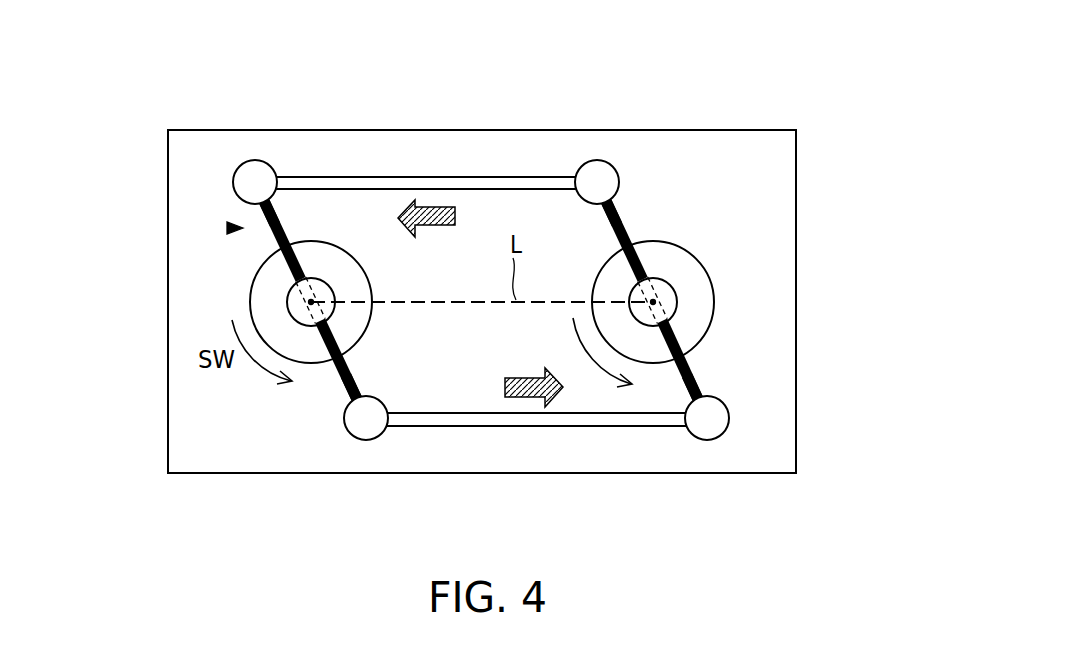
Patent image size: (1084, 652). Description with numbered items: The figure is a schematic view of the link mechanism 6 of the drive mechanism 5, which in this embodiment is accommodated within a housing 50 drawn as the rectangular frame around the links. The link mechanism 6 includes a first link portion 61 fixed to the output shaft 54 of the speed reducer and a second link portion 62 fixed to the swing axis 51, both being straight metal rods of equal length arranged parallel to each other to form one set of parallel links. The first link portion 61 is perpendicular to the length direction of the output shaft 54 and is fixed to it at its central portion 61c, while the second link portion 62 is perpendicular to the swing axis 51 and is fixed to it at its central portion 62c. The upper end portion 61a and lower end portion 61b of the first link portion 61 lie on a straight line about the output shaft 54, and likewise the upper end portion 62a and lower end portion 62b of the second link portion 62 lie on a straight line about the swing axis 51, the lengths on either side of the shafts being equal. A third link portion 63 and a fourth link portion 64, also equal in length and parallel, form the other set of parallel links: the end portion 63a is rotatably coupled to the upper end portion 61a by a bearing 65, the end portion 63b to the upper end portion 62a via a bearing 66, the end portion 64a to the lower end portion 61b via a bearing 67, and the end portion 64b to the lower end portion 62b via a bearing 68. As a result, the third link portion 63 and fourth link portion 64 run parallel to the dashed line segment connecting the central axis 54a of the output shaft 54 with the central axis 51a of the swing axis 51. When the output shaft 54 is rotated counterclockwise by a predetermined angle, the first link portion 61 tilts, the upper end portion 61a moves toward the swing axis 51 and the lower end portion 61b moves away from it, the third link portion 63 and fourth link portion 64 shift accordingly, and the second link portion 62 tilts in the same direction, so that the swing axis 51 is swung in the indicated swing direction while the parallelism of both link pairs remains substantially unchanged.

The drive mechanism 5 is at (784, 68).
The link mechanism 6 is at (228, 228).
The housing 50 is at (796, 188).
The swing axis 51 is at (263, 283).
The central axis of the swing axis 51a is at (189, 308).
The output shaft 54 is at (698, 294).
The central axis of the output shaft 54a is at (654, 302).
The first link portion 61 is at (693, 375).
The upper end portion of the first link portion 61a is at (622, 215).
The lower end portion of the first link portion 61b is at (703, 396).
The central portion of the first link portion 61c is at (779, 281).
The second link portion 62 is at (289, 259).
The upper end portion of the second link portion 62a is at (247, 206).
The lower end portion of the second link portion 62b is at (350, 398).
The central portion of the second link portion 62c is at (311, 302).
The third link portion 63 is at (473, 177).
The end portion of the third link portion 63a is at (561, 177).
The end portion of the third link portion 63b is at (285, 177).
The fourth link portion 64 is at (518, 427).
The end portion of the fourth link portion 64a is at (660, 427).
The end portion of the fourth link portion 64b is at (396, 427).
The bearing 65 is at (607, 163).
The bearing 66 is at (240, 163).
The bearing 67 is at (722, 437).
The bearing 68 is at (352, 437).